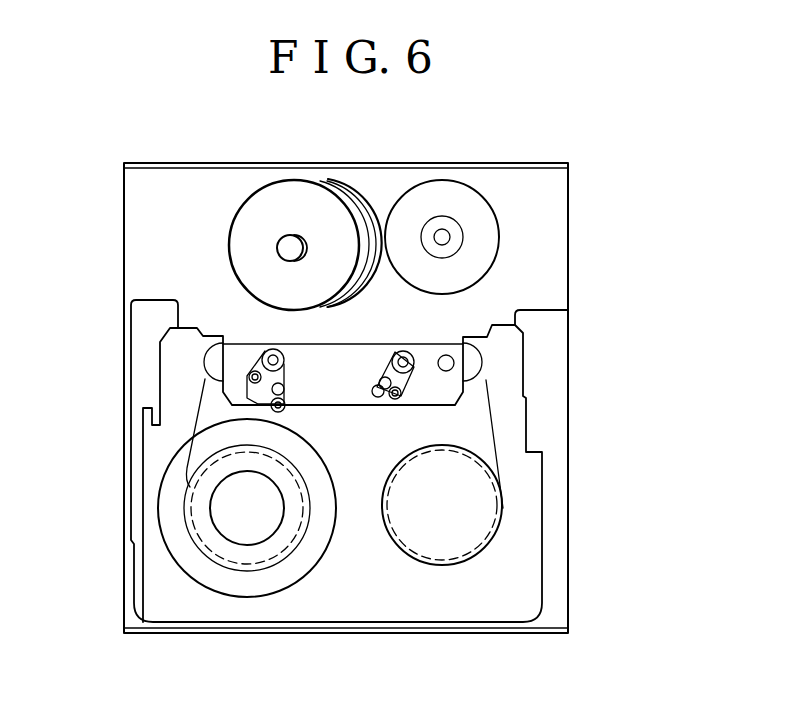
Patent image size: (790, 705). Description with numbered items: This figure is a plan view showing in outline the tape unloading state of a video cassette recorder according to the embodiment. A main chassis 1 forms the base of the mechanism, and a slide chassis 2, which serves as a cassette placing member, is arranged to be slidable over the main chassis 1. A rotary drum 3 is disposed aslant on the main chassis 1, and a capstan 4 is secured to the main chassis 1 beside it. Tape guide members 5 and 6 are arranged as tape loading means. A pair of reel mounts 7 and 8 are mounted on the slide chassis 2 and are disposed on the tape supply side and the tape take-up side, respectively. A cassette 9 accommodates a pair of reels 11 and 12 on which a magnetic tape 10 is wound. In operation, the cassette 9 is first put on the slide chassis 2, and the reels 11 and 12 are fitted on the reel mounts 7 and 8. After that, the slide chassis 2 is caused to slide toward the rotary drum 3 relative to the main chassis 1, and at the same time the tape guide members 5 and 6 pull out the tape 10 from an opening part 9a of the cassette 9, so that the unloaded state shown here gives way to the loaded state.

The main chassis 1 is at (533, 193).
The slide chassis 2 is at (138, 604).
The rotary drum 3 is at (272, 217).
The capstan 4 is at (447, 218).
The tape guide member 5 is at (266, 350).
The tape guide member 6 is at (407, 352).
The reel mount 7 is at (212, 557).
The reel mount 8 is at (412, 572).
The cassette 9 is at (356, 594).
The opening part 9a is at (342, 393).
The magnetic tape 10 is at (313, 343).
The reel 11 is at (253, 573).
The reel 12 is at (458, 567).